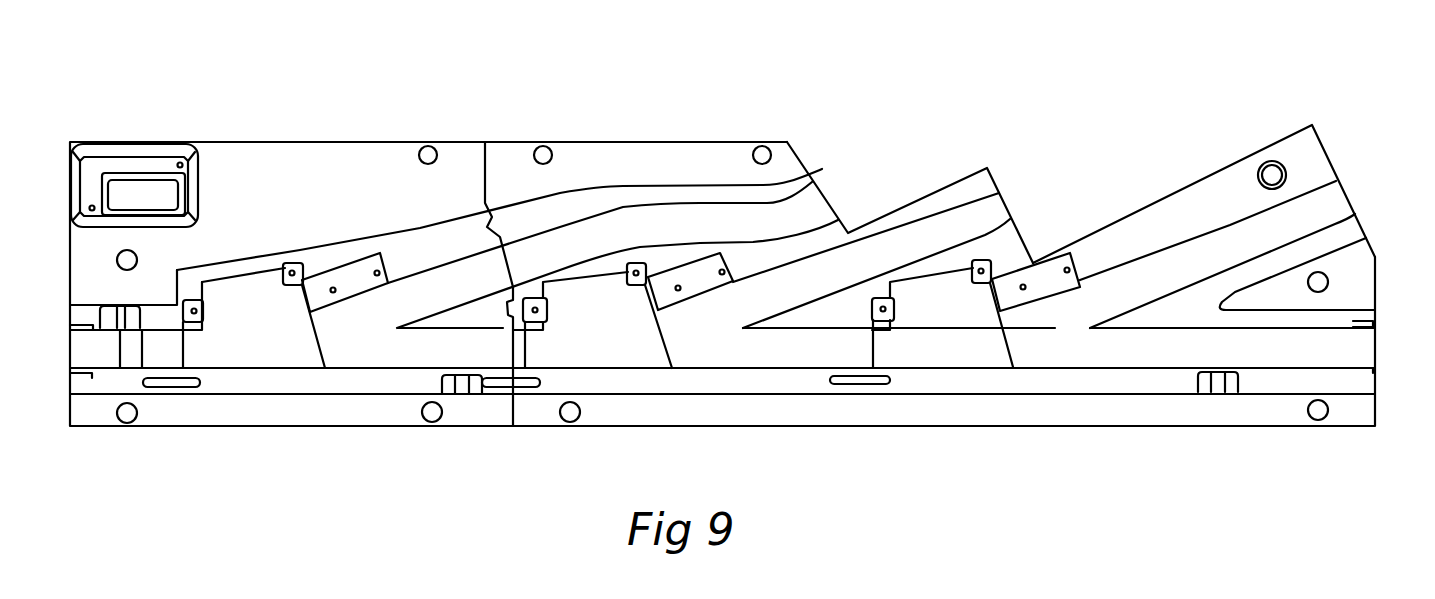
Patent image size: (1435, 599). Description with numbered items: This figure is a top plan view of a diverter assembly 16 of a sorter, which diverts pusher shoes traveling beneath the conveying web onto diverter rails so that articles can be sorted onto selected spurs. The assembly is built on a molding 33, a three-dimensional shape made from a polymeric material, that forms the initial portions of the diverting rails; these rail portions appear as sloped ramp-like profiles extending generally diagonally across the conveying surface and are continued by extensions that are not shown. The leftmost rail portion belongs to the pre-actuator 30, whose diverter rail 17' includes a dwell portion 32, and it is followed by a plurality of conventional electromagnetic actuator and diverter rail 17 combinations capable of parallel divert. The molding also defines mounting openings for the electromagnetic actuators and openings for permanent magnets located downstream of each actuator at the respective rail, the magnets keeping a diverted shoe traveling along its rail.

The diverter assembly 16 is at (790, 138).
The diverter rail 17 is at (1221, 222).
The diverter rail 17' is at (894, 222).
The pre-actuator 30 is at (358, 237).
The dwell portion 32 is at (698, 203).
The molding 33 is at (1272, 428).